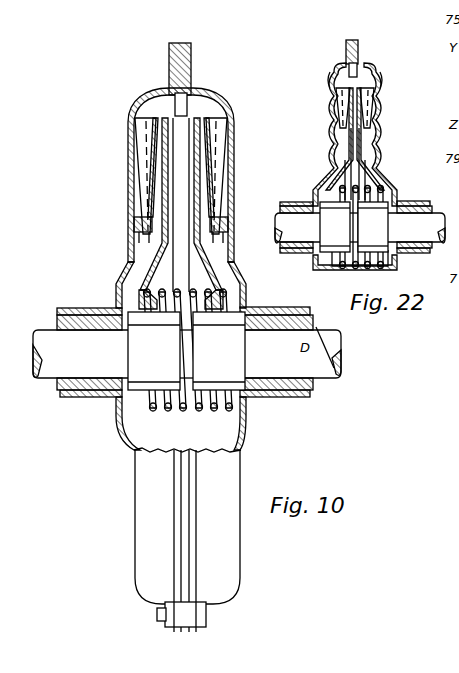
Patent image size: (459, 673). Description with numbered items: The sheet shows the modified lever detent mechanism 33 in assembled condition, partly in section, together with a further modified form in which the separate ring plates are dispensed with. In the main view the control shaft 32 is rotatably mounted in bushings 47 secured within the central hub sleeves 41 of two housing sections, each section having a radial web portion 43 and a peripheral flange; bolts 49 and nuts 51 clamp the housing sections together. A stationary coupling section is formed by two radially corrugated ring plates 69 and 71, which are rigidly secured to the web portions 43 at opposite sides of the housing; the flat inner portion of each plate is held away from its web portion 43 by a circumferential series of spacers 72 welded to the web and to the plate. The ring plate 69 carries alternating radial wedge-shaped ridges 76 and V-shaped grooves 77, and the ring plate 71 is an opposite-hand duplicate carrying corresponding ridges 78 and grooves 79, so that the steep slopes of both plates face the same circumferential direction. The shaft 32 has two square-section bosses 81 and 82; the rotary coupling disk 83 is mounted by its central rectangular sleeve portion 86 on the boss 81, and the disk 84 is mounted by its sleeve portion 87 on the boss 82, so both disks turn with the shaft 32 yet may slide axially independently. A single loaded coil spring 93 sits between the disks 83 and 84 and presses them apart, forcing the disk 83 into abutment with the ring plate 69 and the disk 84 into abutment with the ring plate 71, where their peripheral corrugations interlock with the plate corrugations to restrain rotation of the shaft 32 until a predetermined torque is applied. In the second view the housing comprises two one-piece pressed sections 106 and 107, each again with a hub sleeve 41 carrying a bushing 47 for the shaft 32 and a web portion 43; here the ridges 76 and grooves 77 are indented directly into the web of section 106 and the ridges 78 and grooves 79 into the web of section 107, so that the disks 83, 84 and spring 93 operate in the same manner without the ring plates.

In FIG. 10, the detent mechanism 33 is at (270, 95).
In FIG. 10, the web portion 43 is at (134, 130).
In FIG. 22, the web portion 43 is at (328, 127).
In FIG. 10, the ring plate 71 is at (150, 189).
In FIG. 10, the ring plate 69 is at (212, 195).
In FIG. 10, the spacers 72 is at (136, 225).
In FIG. 10, the disk 83 is at (202, 200).
In FIG. 22, the disk 83 is at (354, 157).
In FIG. 10, the disk 84 is at (168, 236).
In FIG. 22, the disk 84 is at (345, 152).
In FIG. 10, the coil spring 93 is at (185, 412).
In FIG. 22, the coil spring 93 is at (362, 215).
In FIG. 10, the boss 82 is at (126, 356).
In FIG. 22, the boss 82 is at (297, 227).
In FIG. 10, the boss 81 is at (241, 357).
In FIG. 22, the boss 81 is at (397, 227).
In FIG. 10, the rectangular sleeve portion 87 is at (161, 318).
In FIG. 22, the rectangular sleeve portion 87 is at (335, 227).
In FIG. 10, the rectangular sleeve portion 86 is at (225, 318).
In FIG. 22, the rectangular sleeve portion 86 is at (373, 227).
In FIG. 10, the control shaft 32 is at (38, 376).
In FIG. 22, the control shaft 32 is at (445, 243).
In FIG. 10, the hub sleeve 41 is at (90, 308).
In FIG. 22, the hub sleeve 41 is at (295, 202).
In FIG. 10, the bushings 47 is at (57, 322).
In FIG. 22, the bushings 47 is at (432, 207).
In FIG. 10, the bolts 49 is at (207, 618).
In FIG. 10, the nuts 51 is at (162, 618).
In FIG. 22, the housing section 107 is at (333, 68).
In FIG. 22, the housing section 106 is at (377, 68).
In FIG. 22, the wedge shaped ridges 78 is at (330, 76).
In FIG. 22, the wedge shaped ridges 76 is at (380, 76).
In FIG. 22, the V-shaped grooves 79 is at (334, 92).
In FIG. 22, the V-shaped grooves 77 is at (378, 95).